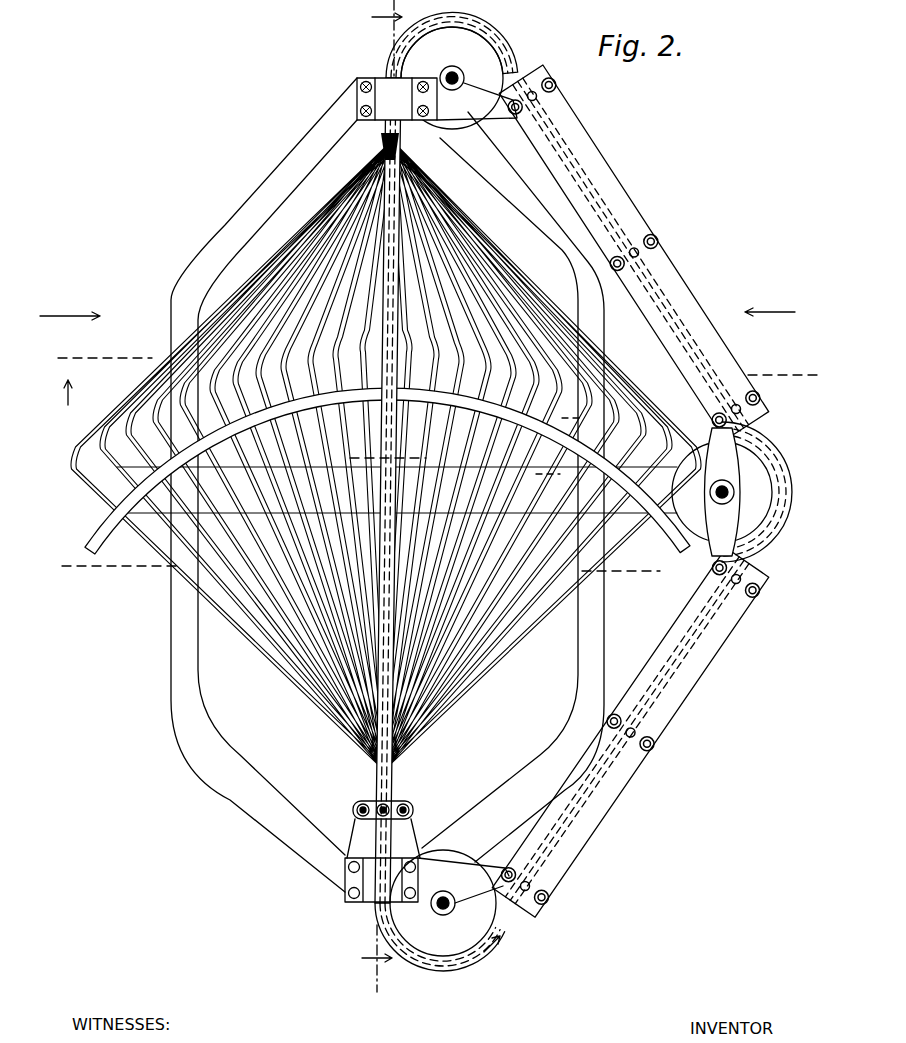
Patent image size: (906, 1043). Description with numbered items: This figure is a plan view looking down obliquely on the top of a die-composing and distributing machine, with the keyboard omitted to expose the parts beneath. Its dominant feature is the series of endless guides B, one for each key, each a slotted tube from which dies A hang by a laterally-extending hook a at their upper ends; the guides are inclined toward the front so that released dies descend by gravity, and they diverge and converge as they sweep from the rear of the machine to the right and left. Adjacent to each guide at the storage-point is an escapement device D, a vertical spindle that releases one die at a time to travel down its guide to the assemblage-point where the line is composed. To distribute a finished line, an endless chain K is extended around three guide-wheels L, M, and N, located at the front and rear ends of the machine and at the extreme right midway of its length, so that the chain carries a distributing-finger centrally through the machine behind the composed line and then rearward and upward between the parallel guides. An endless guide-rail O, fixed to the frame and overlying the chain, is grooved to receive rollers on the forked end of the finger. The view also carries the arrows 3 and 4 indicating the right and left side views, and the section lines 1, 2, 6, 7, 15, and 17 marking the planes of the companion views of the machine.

The guide-wheel M is at (437, 70).
The die A is at (402, 150).
The escapement device D is at (268, 186).
The endless guide B is at (302, 250).
The guide-wheel N is at (766, 470).
The endless chain K is at (748, 573).
The section line 15 is at (695, 650).
The guide-wheel L is at (462, 858).
The endless guide-rail O is at (396, 706).
The section line 17 is at (377, 964).
The arrow 4 is at (221, 160).
The arrow 3 is at (770, 303).
The hook a is at (437, 376).
The section line 1 is at (361, 569).
The section line 6 is at (385, 458).
The section line 2 is at (548, 463).
The section line 7 is at (573, 406).